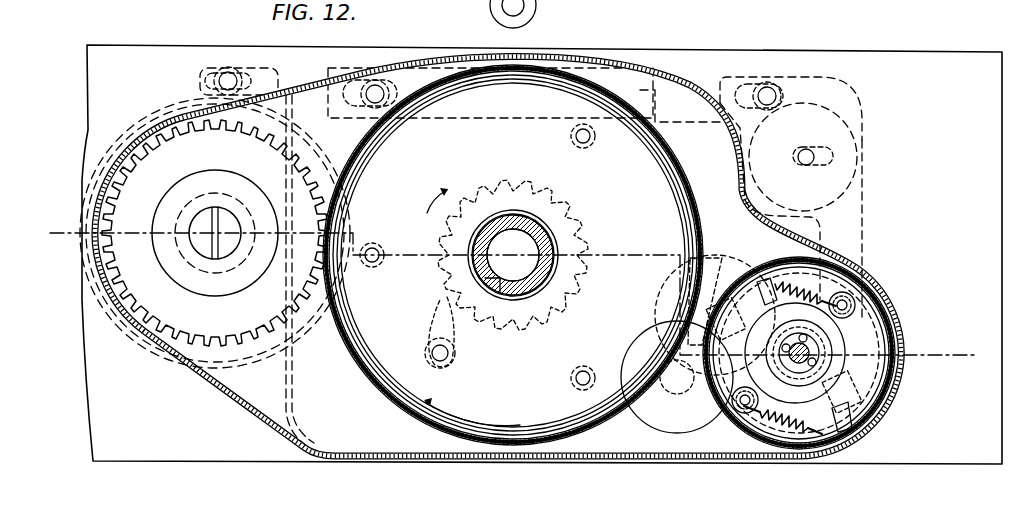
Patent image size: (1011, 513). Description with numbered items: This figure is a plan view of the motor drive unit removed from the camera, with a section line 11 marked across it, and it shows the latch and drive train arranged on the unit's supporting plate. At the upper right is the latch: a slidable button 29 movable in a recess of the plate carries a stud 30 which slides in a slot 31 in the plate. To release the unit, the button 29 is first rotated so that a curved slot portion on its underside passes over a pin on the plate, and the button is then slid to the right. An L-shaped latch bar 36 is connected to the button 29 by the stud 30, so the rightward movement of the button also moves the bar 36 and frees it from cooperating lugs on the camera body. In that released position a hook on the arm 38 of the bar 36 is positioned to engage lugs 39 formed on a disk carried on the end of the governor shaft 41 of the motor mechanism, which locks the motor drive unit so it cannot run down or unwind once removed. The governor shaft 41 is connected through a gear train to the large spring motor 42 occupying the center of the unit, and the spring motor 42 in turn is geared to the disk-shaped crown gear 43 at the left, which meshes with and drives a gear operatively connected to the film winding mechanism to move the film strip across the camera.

The section line 11- 11 is at (50, 230).
The slidable button 29 is at (865, 130).
The stud 30 is at (806, 165).
The slot 31 is at (819, 147).
The L-shaped latch bar 36 is at (850, 97).
The arm 38 is at (863, 228).
The lugs 39 is at (784, 356).
The governor shaft 41 is at (880, 363).
The spring motor 42 is at (662, 170).
The crown gear 43 is at (296, 336).